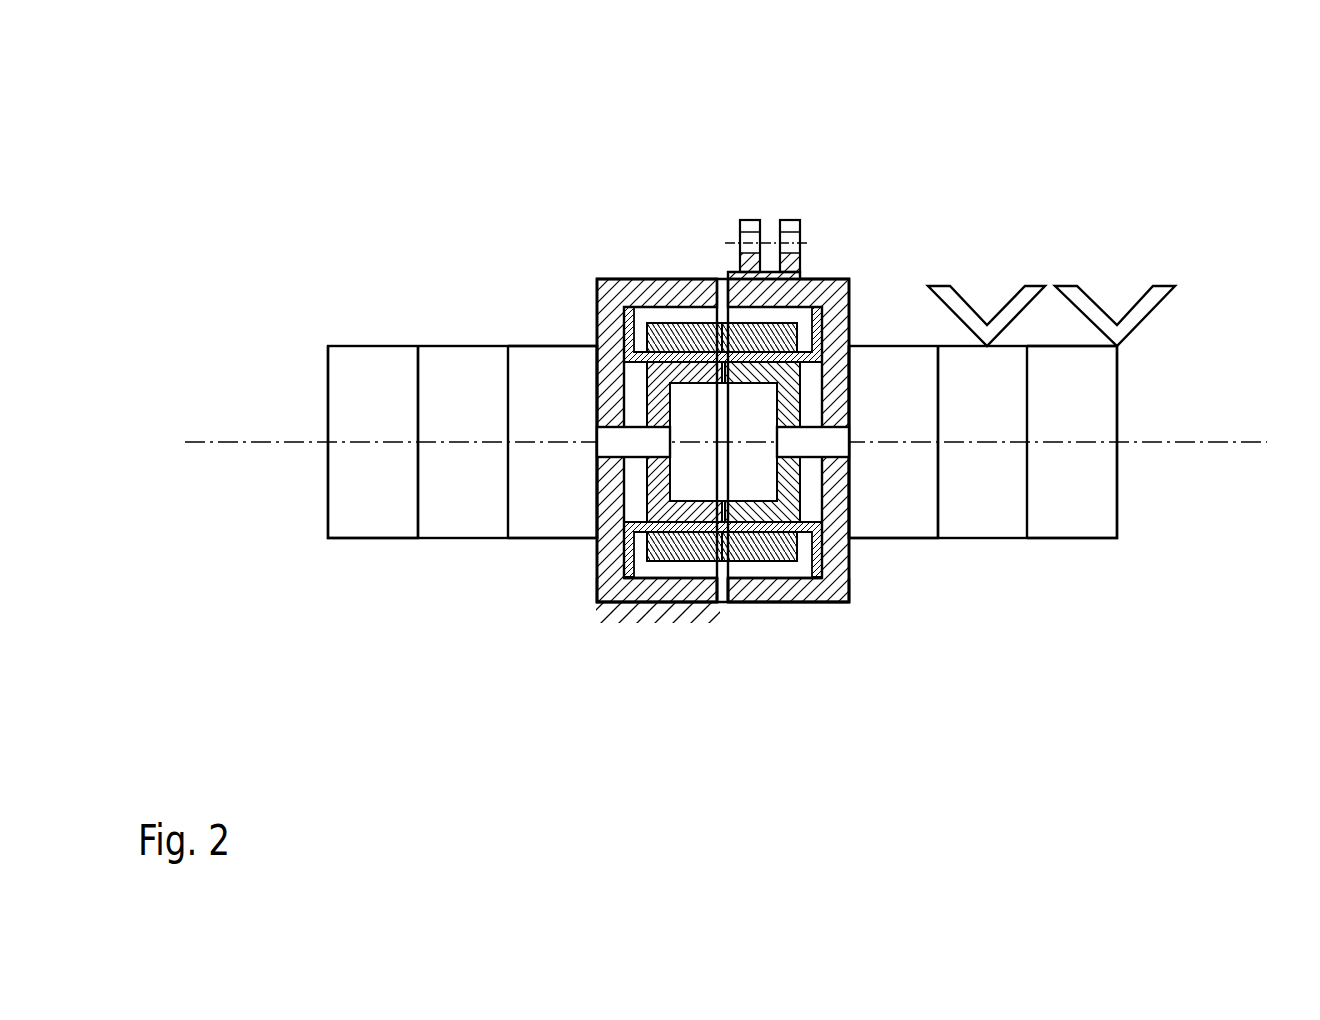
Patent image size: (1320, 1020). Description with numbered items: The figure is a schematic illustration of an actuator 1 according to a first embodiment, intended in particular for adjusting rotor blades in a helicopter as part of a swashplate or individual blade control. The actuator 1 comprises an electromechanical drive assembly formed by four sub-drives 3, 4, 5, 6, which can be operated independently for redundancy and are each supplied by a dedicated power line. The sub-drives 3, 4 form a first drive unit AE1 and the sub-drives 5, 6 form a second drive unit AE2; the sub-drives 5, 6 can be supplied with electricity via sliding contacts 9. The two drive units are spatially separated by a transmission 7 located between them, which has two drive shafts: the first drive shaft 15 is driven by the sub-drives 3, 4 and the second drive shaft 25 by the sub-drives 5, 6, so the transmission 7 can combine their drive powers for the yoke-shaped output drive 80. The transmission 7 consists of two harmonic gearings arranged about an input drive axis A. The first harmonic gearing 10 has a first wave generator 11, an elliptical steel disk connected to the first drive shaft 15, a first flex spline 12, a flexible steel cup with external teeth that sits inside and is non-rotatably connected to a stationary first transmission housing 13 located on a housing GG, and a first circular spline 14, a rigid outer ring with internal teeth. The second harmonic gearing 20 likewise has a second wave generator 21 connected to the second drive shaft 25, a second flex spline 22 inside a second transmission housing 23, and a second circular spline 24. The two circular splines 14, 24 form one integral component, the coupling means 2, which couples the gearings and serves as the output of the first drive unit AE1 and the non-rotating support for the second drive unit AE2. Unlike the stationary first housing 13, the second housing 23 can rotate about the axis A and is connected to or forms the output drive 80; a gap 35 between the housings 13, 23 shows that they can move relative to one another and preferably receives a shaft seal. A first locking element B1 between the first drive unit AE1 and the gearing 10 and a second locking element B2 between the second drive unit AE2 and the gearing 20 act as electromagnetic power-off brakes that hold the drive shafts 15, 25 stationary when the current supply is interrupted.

The actuator 1 is at (310, 185).
The coupling means 2 is at (720, 337).
The sub-drive 3 is at (370, 497).
The sub-drive 4 is at (467, 497).
The sub-drive 5 is at (991, 497).
The sub-drive 6 is at (1074, 497).
The transmission 7 is at (808, 64).
The sliding contacts 9 is at (1072, 245).
The first harmonic gearing 10 is at (658, 157).
The second harmonic gearing 20 is at (770, 157).
The first wave generator 11 is at (657, 397).
The first flex spline 12 is at (623, 342).
The first transmission housing 13 is at (673, 590).
The first circular spline 14 is at (670, 330).
The first drive shaft 15 is at (620, 437).
The second wave generator 21 is at (790, 398).
The second flex spline 22 is at (822, 350).
The second transmission housing 23 is at (788, 590).
The second circular spline 24 is at (785, 335).
The second drive shaft 25 is at (813, 437).
The gap 35 is at (726, 621).
The output drive 80 is at (760, 228).
The input drive axis A is at (1212, 442).
The first locking element B1 is at (540, 497).
The second locking element B2 is at (893, 497).
The first drive unit AE1 is at (475, 620).
The second drive unit AE2 is at (1120, 620).
The housing GG is at (628, 615).